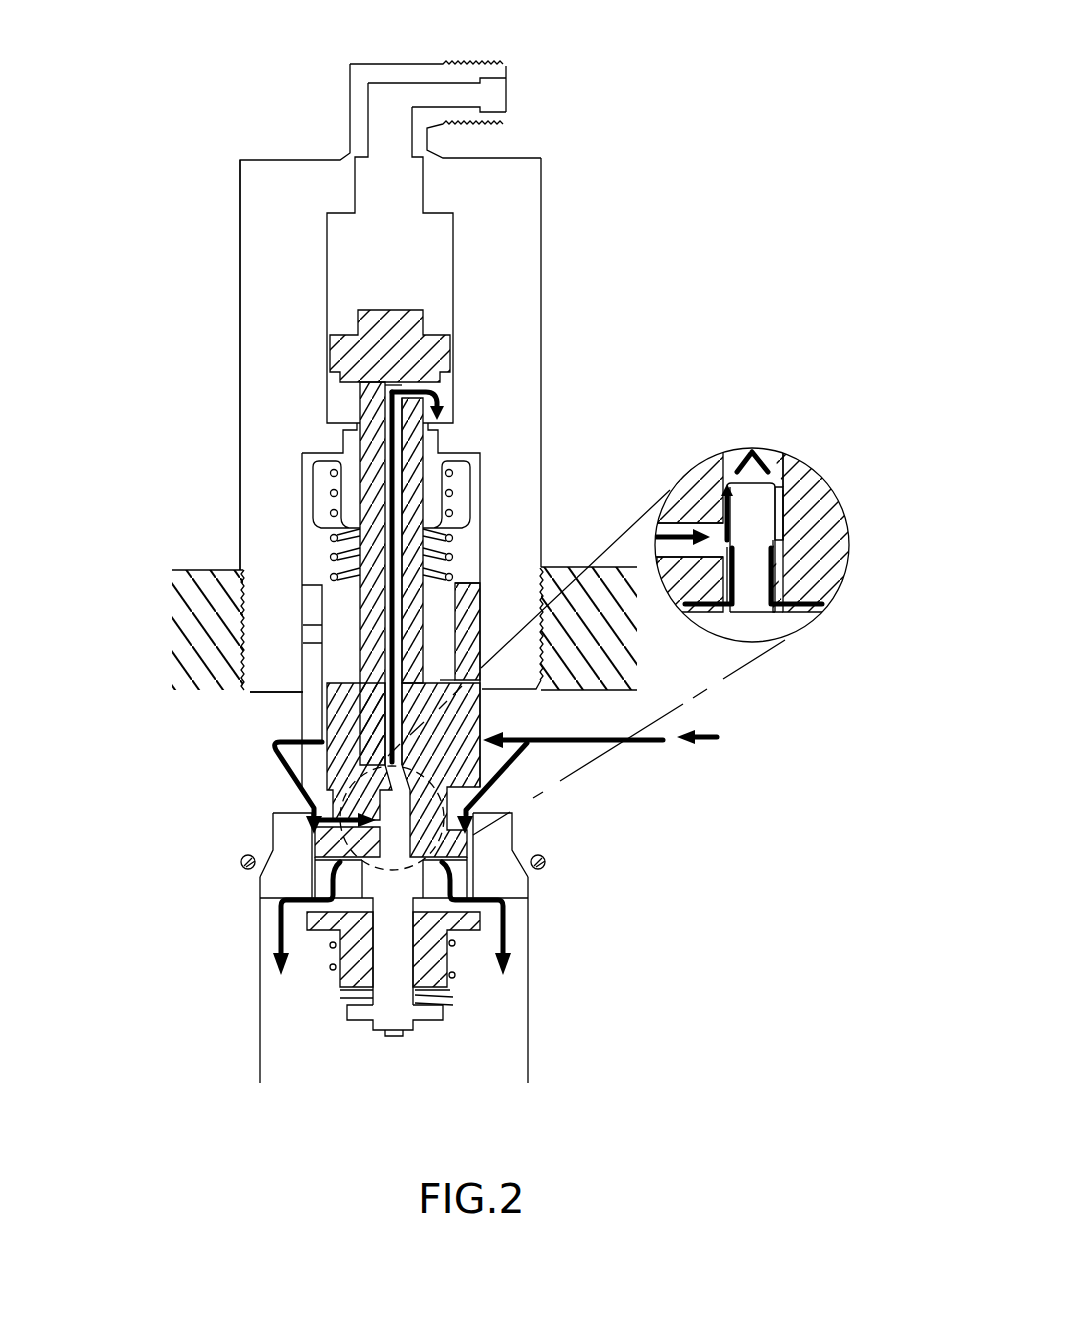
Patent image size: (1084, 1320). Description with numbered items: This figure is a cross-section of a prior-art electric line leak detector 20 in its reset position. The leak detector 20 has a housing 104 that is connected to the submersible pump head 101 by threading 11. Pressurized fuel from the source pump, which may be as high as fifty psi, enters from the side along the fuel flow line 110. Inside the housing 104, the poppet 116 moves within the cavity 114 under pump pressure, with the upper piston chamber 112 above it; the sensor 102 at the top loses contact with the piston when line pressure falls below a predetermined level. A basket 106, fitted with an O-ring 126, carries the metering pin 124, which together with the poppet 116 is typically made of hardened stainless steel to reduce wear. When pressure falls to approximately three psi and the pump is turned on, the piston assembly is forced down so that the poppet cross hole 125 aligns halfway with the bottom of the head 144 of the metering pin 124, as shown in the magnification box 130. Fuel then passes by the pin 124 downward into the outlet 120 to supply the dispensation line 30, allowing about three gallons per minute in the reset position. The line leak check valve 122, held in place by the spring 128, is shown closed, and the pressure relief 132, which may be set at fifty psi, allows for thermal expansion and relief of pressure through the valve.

The leak detector 20 is at (240, 258).
The dispensation line 30 is at (528, 1060).
The threading 11 is at (243, 645).
The submersible pump head 101 is at (190, 568).
The sensor 102 is at (468, 63).
The housing 104 is at (240, 352).
The basket 106 is at (273, 830).
The fuel flow line 110 is at (737, 728).
The upper piston chamber 112 is at (447, 383).
The cavity 114 is at (472, 512).
The poppet 116 is at (472, 607).
The outlet 120 is at (270, 945).
The line leak check valve 122 is at (365, 1022).
The metering pin 124 is at (798, 470).
The poppet cross hole 125 is at (720, 512).
The O-ring 126 is at (543, 856).
The spring 128 is at (337, 987).
The magnification box 130 is at (793, 452).
The pressure relief 132 is at (453, 974).
The head 144 is at (828, 493).